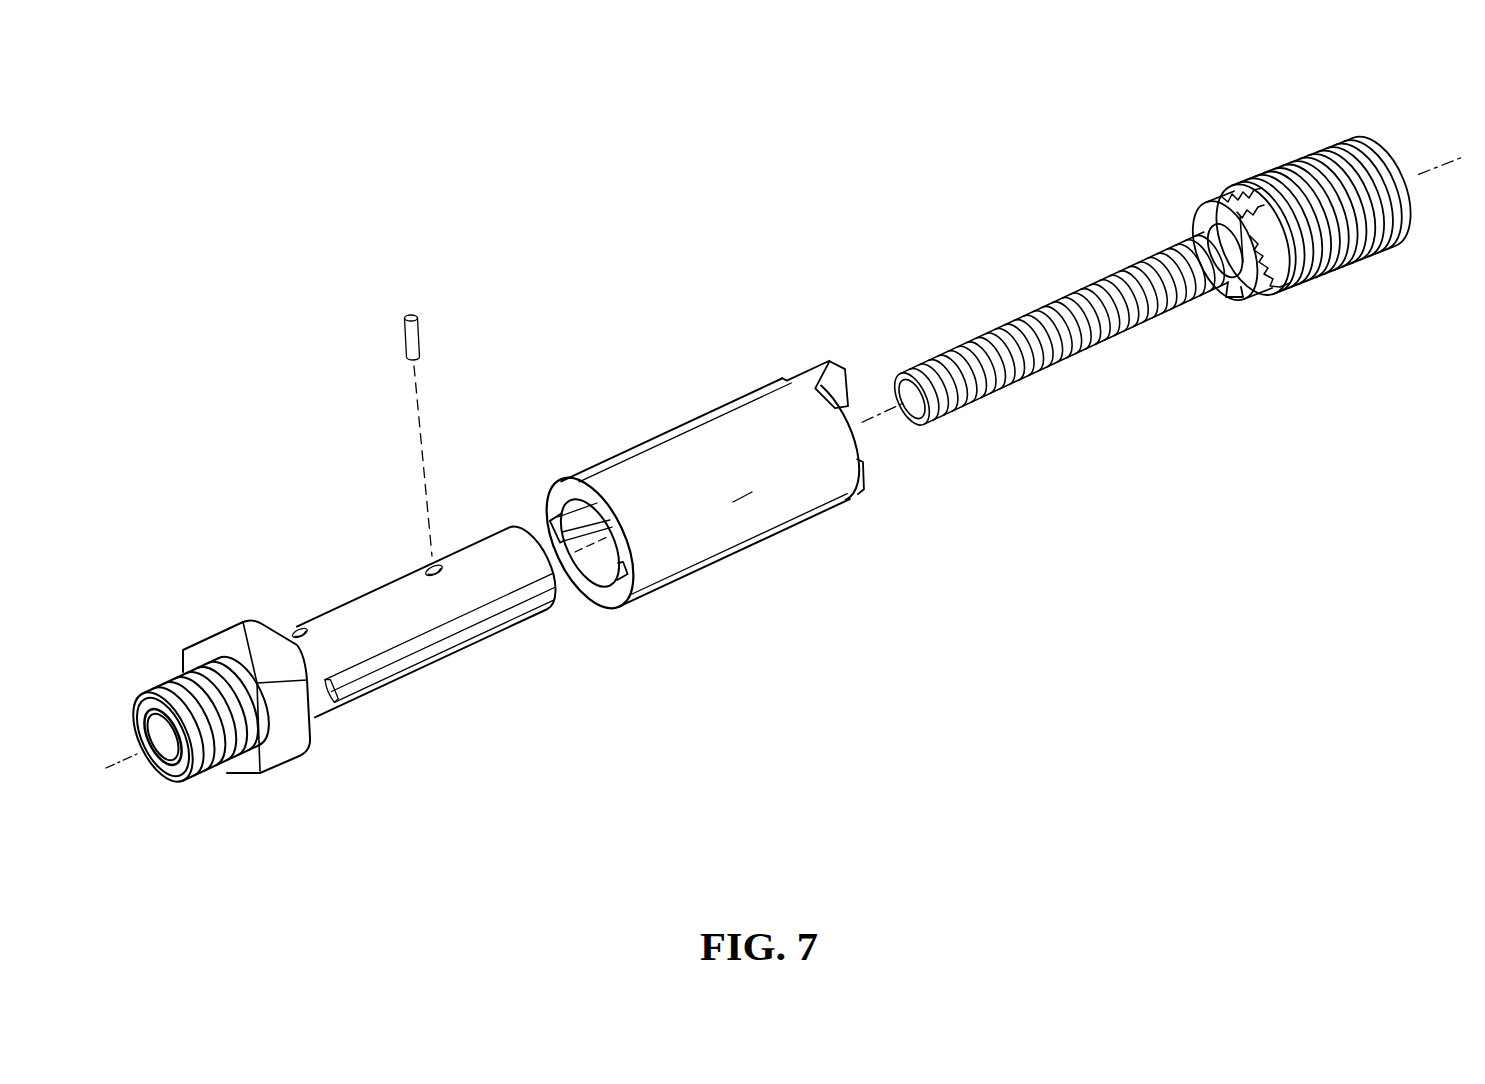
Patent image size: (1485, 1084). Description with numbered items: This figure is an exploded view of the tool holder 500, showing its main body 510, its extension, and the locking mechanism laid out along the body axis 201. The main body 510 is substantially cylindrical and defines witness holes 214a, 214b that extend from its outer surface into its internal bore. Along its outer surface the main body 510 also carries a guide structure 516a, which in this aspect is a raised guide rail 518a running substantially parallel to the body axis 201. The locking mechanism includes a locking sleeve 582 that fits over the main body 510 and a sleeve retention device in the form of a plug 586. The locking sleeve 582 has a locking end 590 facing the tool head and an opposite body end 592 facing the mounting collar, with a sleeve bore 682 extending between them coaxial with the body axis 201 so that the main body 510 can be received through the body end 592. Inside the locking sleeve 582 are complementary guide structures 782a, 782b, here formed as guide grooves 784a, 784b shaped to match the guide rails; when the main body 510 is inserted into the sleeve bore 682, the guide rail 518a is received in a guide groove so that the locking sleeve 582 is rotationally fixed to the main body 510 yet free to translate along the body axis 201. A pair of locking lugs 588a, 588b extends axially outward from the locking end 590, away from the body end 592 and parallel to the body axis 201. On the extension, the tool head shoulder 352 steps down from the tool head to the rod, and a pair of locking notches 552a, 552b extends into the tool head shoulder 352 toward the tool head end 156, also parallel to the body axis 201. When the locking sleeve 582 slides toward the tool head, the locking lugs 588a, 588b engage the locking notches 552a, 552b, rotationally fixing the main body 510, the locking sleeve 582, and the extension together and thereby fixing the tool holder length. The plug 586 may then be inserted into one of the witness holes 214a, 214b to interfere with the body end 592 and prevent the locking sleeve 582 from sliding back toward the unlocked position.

The tool holder 500 is at (698, 96).
The main body 510 is at (340, 608).
The body axis 201 is at (117, 763).
The witness hole 214a is at (292, 624).
The witness hole 214b is at (423, 562).
The guide structure 516a is at (402, 665).
The guide rail 518a is at (352, 688).
The plug 586 is at (414, 338).
The locking sleeve 582 is at (693, 445).
The locking lug 588a is at (828, 370).
The locking lug 588b is at (865, 478).
The locking end 590 is at (852, 420).
The body end 592 is at (577, 598).
The sleeve bore 682 is at (601, 572).
The guide structure 782a is at (548, 523).
The guide structure 782b is at (635, 556).
The guide groove 784a is at (565, 515).
The guide groove 784b is at (633, 532).
The tool head end 156 is at (1383, 140).
The tool head shoulder 352 is at (1208, 217).
The locking notch 552a is at (1220, 190).
The locking notch 552b is at (1236, 300).